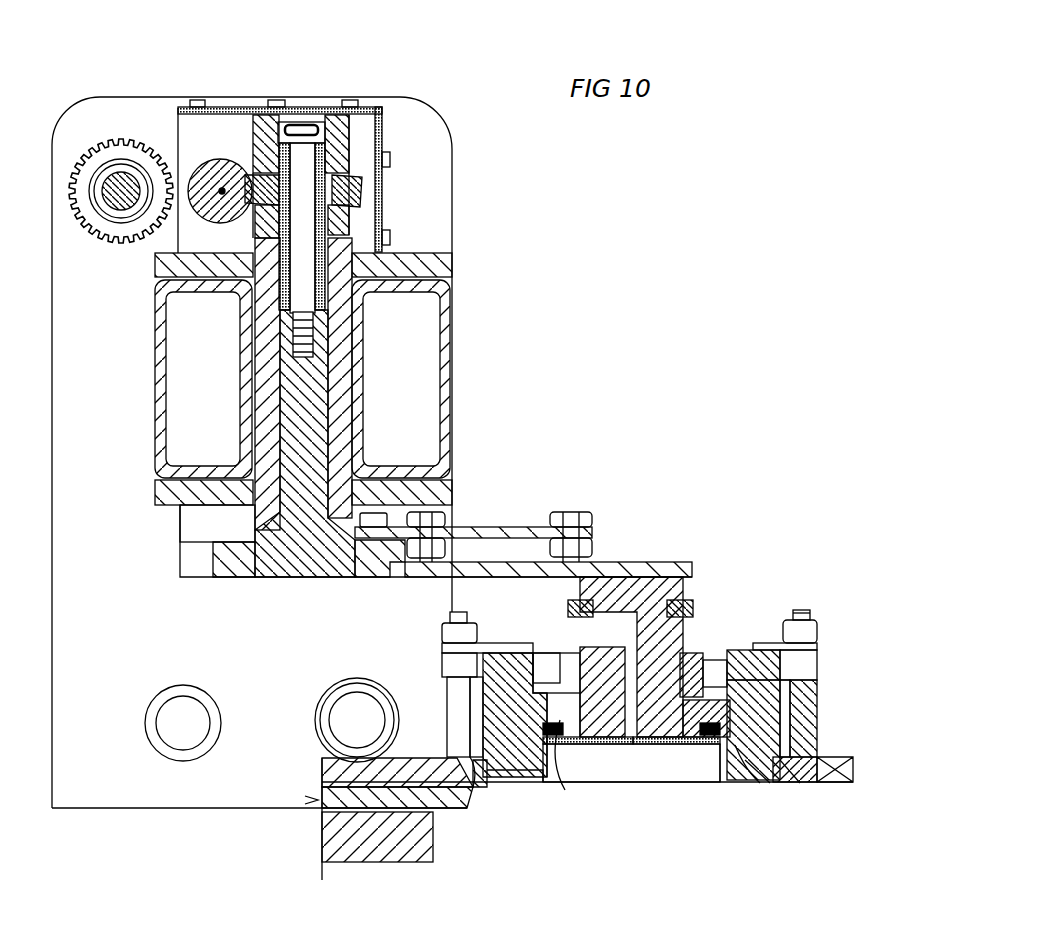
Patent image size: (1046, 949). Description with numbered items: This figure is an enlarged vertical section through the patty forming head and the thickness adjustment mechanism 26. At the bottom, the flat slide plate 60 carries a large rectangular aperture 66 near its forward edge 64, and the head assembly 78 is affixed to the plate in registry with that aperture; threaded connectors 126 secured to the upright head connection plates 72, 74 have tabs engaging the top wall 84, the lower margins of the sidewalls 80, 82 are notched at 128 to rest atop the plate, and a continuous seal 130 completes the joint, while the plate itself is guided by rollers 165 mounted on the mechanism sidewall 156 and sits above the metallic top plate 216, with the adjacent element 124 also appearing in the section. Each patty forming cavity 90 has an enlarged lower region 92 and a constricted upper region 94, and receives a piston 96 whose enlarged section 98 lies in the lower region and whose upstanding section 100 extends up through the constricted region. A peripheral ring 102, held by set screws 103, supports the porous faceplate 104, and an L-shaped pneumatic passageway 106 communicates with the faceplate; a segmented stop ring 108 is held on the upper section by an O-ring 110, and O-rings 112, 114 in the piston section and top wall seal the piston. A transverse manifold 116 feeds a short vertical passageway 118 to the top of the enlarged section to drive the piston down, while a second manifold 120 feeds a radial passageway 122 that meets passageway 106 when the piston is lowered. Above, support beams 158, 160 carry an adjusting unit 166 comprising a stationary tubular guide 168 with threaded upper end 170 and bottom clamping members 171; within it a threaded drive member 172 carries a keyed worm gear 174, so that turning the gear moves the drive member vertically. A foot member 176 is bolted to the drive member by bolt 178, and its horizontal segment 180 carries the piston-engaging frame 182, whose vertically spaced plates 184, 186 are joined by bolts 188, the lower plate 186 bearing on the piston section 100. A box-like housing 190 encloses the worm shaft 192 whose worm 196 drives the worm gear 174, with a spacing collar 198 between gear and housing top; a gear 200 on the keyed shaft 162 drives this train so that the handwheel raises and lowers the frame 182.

The adjustment mechanism 26 is at (576, 263).
The slide plate 60 is at (375, 680).
The forward edge 64 is at (815, 778).
The aperture 66 is at (790, 790).
The head connection plate 72 is at (455, 700).
The head connection plate 74 is at (790, 730).
The head assembly 78 is at (740, 805).
The sidewall 80 is at (470, 715).
The sidewall 82 is at (780, 750).
The top wall 84 is at (565, 655).
The patty forming cavity 90 is at (650, 810).
The enlarged lower region 92 is at (565, 742).
The radially constricted upper region 94 is at (690, 650).
The piston 96 is at (675, 592).
The enlarged section 98 is at (630, 742).
The upstanding section 100 is at (660, 575).
The peripheral ring 102 is at (718, 780).
The set screw 103 is at (560, 785).
The faceplate 104 is at (565, 780).
The pneumatic passageway 106 is at (612, 612).
The stop ring 108 is at (570, 615).
The O-ring 110 is at (690, 608).
The O-ring 112 is at (745, 670).
The O-ring 114 is at (492, 787).
The air passageway 116 is at (800, 620).
The vertical air passageway 118 is at (805, 675).
The passageway 120 is at (545, 655).
The air passageway 122 is at (540, 715).
The plate 124 is at (460, 805).
The threaded connector 126 is at (800, 648).
The notch 128 is at (480, 790).
The seal 130 is at (755, 790).
The sidewall 156 is at (112, 604).
The support beam 158 is at (162, 370).
The support beam 160 is at (455, 400).
The keyed shaft 162 is at (128, 170).
The roller 165 is at (180, 705).
The adjusting unit 166 is at (433, 214).
The tubular guide 168 is at (350, 392).
The threaded upper end 170 is at (338, 300).
The bottom clamping member 171 is at (210, 525).
The drive member 172 is at (268, 305).
The worm gear 174 is at (360, 190).
The foot member 176 is at (290, 580).
The bolt 178 is at (305, 125).
The horizontally extending segment 180 is at (325, 578).
The piston-engaging frame 182 is at (668, 510).
The plate 184 is at (490, 525).
The plate 186 is at (595, 570).
The bolt 188 is at (475, 505).
The housing 190 is at (340, 135).
The worm shaft 192 is at (238, 140).
The worm 196 is at (200, 160).
The spacing collar 198 is at (372, 120).
The gear 200 is at (52, 135).
The top plate 216 is at (412, 862).